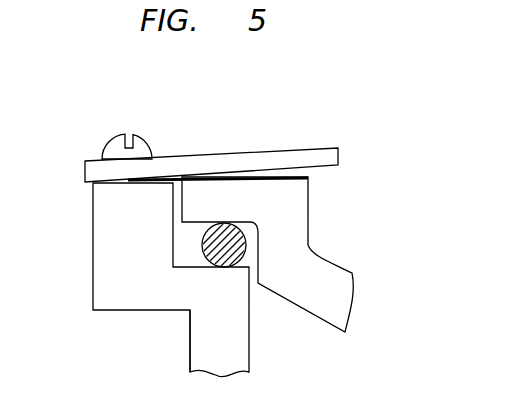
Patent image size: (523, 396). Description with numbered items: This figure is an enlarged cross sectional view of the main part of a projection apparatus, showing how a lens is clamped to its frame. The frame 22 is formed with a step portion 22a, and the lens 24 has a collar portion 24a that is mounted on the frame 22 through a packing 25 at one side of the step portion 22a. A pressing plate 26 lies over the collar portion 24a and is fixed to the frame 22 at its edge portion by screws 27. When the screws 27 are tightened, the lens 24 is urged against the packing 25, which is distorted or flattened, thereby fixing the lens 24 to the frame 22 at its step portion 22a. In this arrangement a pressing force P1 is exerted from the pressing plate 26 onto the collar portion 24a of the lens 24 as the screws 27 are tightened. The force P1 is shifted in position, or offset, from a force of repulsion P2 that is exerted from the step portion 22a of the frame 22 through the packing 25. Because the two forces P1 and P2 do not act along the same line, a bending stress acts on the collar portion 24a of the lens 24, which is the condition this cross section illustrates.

The frame 22 is at (105, 258).
The step portion 22a is at (195, 358).
The lens 24 is at (317, 312).
The collar portion 24a is at (242, 187).
The packing 25 is at (202, 253).
The pressing plate 26 is at (333, 152).
The screws 27 is at (122, 137).
The pressing force P1 is at (183, 171).
The force of repulsion P2 is at (224, 227).